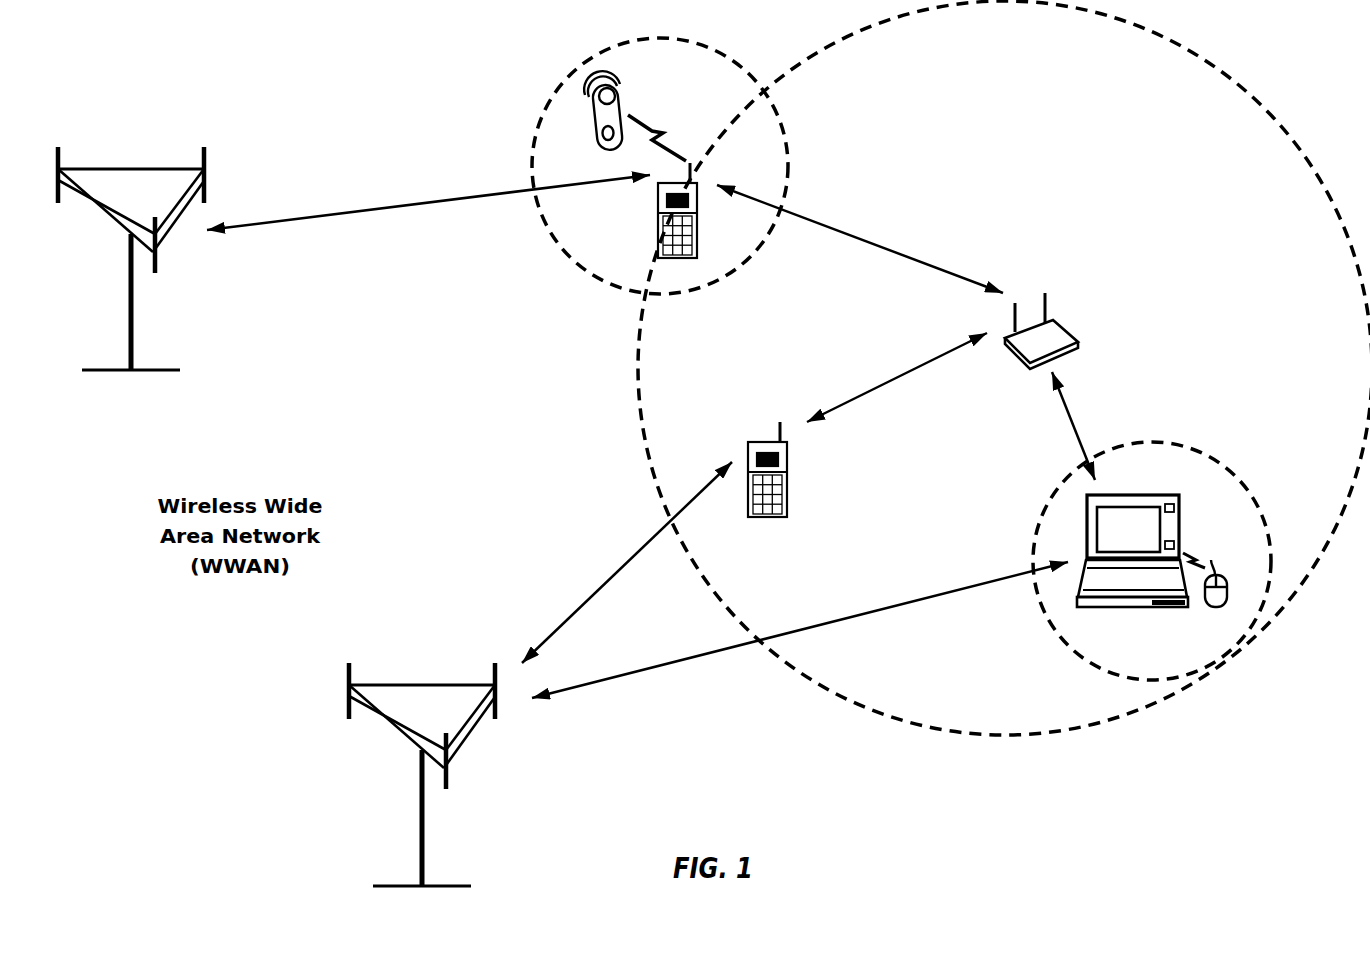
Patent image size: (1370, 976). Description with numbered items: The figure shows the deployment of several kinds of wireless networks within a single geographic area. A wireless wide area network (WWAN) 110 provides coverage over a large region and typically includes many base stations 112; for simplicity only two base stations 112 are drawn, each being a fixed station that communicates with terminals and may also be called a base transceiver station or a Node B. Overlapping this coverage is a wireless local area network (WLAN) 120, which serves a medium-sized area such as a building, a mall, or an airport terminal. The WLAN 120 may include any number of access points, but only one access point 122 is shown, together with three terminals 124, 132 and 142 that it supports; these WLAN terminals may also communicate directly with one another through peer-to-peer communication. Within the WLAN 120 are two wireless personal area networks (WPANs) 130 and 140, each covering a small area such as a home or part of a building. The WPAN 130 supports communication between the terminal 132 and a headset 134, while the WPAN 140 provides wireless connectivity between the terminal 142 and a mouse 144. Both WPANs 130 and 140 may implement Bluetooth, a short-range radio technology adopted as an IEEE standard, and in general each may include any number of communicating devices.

The wireless wide area network (WWAN) 110 is at (282, 144).
The base station 112 is at (122, 169).
The wireless local area network (WLAN) 120 is at (1226, 70).
The access point 122 is at (1068, 328).
The terminal 124 is at (766, 442).
The wireless personal area network (WPAN) 130 is at (655, 37).
The terminal 132 is at (658, 224).
The headset 134 is at (594, 122).
The wireless personal area network (WPAN) 140 is at (1240, 478).
The terminal 142 is at (1128, 494).
The mouse 144 is at (1222, 580).